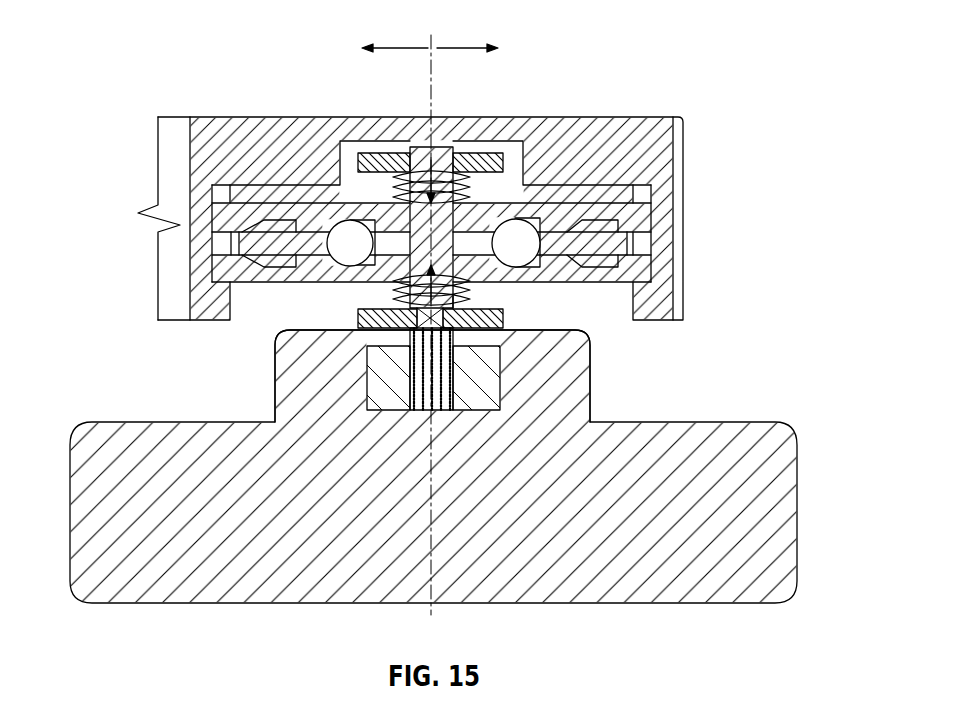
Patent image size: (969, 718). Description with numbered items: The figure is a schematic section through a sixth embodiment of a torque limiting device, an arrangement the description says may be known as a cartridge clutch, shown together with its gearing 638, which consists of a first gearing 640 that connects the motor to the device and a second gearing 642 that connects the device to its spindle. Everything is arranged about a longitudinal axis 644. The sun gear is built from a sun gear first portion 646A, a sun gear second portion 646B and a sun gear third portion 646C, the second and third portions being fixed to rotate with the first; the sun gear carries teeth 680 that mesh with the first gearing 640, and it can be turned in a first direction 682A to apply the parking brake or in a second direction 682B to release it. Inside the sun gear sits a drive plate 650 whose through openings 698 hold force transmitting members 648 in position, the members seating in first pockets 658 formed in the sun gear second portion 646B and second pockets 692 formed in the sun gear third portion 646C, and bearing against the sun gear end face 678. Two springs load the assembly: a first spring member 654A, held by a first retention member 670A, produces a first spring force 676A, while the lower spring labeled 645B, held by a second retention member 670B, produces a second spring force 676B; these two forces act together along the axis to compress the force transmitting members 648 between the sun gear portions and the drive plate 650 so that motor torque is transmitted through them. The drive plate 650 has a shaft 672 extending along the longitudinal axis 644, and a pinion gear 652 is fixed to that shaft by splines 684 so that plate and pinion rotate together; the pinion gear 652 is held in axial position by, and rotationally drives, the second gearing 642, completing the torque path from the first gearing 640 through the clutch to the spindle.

The gearing 638 is at (108, 388).
The first gearing 640 is at (158, 178).
The second gearing 642 is at (797, 498).
The longitudinal axis 644 is at (440, 610).
The second spring member 645B is at (368, 293).
The sun gear first portion 646A is at (650, 118).
The sun gear second portion 646B is at (593, 182).
The sun gear third portion 646C is at (223, 265).
The force transmitting members 648 is at (342, 237).
The drive plate 650 is at (272, 247).
The pinion gear 652 is at (500, 360).
The first spring member 654A is at (393, 183).
The first pockets 658 is at (600, 227).
The first retention member 670A is at (372, 153).
The second retention member 670B is at (363, 326).
The shaft 672 is at (407, 398).
The first spring force 676A is at (452, 168).
The second spring force 676B is at (457, 302).
The sun gear end face 678 is at (485, 232).
The teeth 680 is at (683, 172).
The first direction 682A is at (400, 45).
The second direction 682B is at (470, 45).
The splines 684 is at (455, 395).
The second pockets 692 is at (600, 262).
The through openings 698 is at (567, 228).